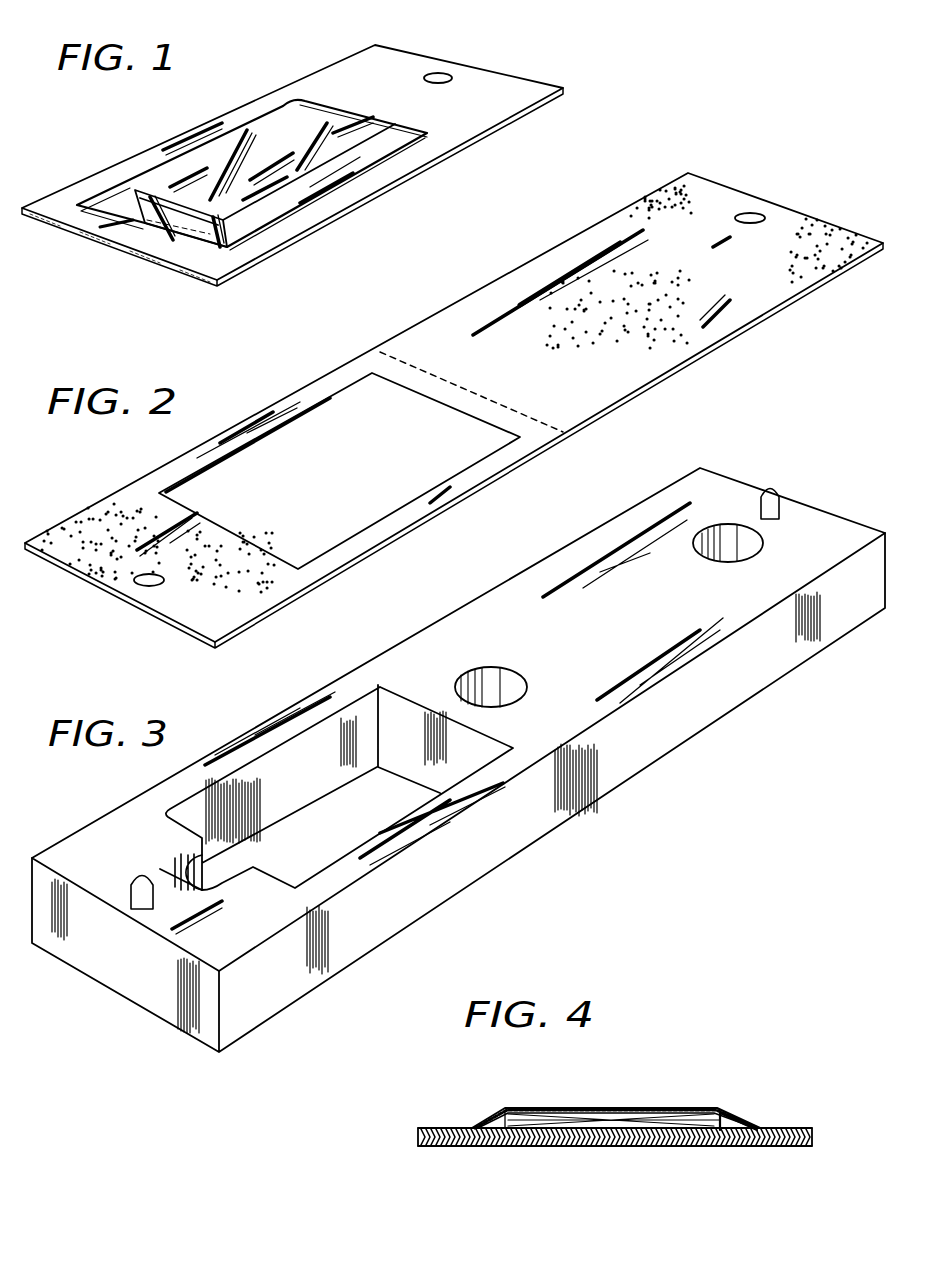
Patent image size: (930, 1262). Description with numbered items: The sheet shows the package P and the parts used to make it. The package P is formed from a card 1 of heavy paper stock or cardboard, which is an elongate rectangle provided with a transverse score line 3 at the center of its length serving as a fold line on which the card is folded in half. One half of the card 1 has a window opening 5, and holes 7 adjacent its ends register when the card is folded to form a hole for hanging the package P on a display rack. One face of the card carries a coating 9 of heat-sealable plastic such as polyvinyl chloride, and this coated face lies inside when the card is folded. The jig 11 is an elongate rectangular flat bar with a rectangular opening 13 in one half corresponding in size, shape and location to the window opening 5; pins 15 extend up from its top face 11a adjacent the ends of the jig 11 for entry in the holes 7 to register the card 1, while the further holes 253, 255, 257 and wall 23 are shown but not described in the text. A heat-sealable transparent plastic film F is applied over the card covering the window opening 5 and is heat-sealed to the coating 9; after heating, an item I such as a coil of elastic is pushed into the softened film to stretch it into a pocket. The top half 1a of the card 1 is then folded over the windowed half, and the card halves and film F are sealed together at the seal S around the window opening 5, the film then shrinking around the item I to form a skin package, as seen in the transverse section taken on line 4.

In FIG. 1, the card 1 is at (385, 141).
In FIG. 2, the card 1 is at (762, 338).
In FIG. 4, the card 1 is at (508, 1147).
In FIG. 4, the top half of the card 1a is at (730, 1147).
In FIG. 2, the transverse score line 3 is at (473, 392).
In FIG. 1, the section line 4— 4 is at (128, 123).
In FIG. 2, the window opening 5 is at (340, 489).
In FIG. 4, the window opening 5 is at (760, 1125).
In FIG. 1, the holes 7 is at (444, 72).
In FIG. 2, the holes 7 is at (137, 584).
In FIG. 2, the coating 9 is at (236, 557).
In FIG. 3, the jig 11 is at (458, 764).
In FIG. 3, the top face of the jig 11a is at (863, 535).
In FIG. 3, the rectangular opening 13 is at (370, 833).
In FIG. 3, the pins 15 is at (777, 488).
In FIG. 4, the dome side wall 23 is at (693, 1112).
In FIG. 3, the pin receiving hole 253 is at (703, 556).
In FIG. 3, the pin receiving hole 255 is at (533, 702).
In FIG. 3, the pin receiving hole 257 is at (188, 891).
In FIG. 1, the heat-sealable transparent plastic film F is at (276, 135).
In FIG. 4, the heat-sealable transparent plastic film F is at (622, 1108).
In FIG. 4, the item I is at (568, 1113).
In FIG. 1, the package P is at (325, 157).
In FIG. 4, the package P is at (585, 1118).
In FIG. 1, the seal S is at (268, 254).
In FIG. 4, the seal S is at (418, 1135).